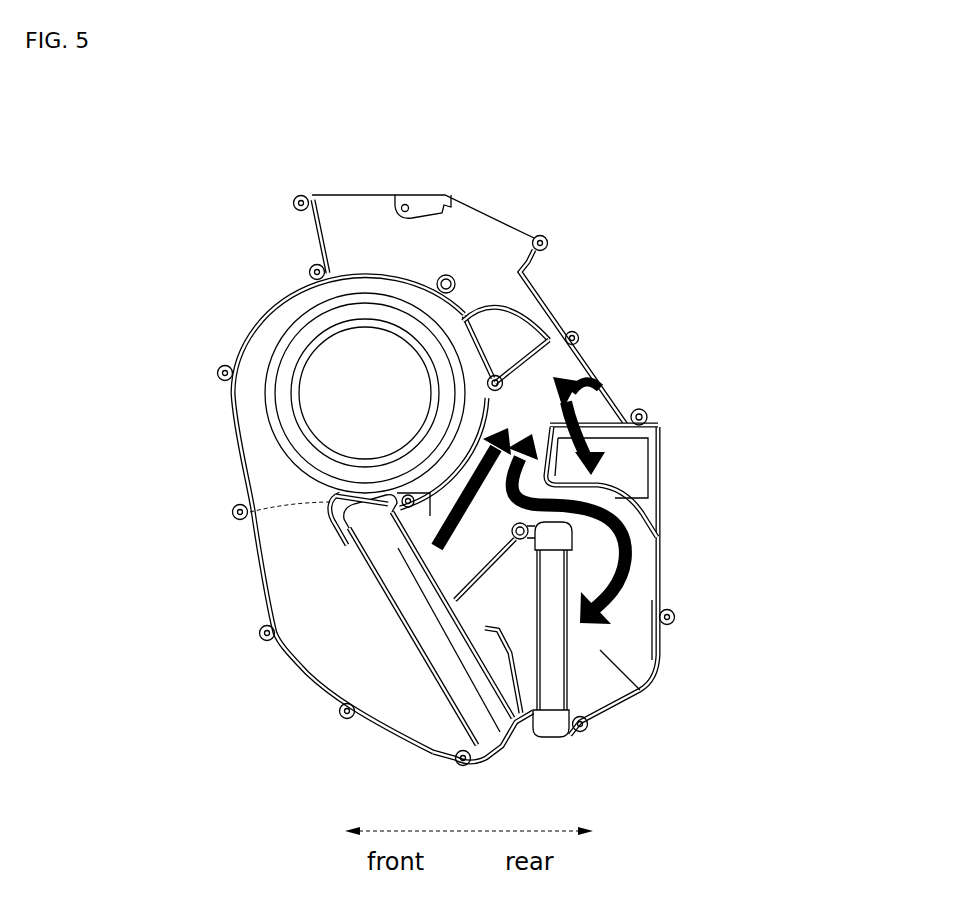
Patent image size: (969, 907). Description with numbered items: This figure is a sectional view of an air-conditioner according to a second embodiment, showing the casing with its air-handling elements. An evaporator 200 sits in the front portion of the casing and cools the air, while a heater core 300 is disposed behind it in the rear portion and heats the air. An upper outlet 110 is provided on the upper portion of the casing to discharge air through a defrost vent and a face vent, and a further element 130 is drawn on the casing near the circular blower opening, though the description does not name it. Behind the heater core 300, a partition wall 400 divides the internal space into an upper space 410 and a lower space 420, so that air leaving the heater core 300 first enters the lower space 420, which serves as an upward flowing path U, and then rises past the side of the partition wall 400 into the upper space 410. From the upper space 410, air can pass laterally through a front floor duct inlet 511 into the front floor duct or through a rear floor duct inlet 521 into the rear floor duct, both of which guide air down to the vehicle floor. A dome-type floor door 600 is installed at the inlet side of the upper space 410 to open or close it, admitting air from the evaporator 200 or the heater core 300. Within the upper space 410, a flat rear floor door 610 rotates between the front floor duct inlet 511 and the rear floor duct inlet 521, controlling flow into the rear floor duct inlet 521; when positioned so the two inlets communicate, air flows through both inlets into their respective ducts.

The upper outlet 110 is at (375, 195).
The blower inlet ring 130 is at (330, 402).
The evaporator 200 is at (400, 620).
The heater core 300 is at (557, 647).
The partition wall 400 is at (652, 508).
The upper space 410 is at (648, 416).
The lower space 420 is at (617, 663).
The front floor duct inlet 511 is at (608, 390).
The rear floor duct inlet 521 is at (637, 478).
The floor door 600 is at (543, 365).
The rear floor door 610 is at (625, 545).
The upward flowing path U is at (655, 635).